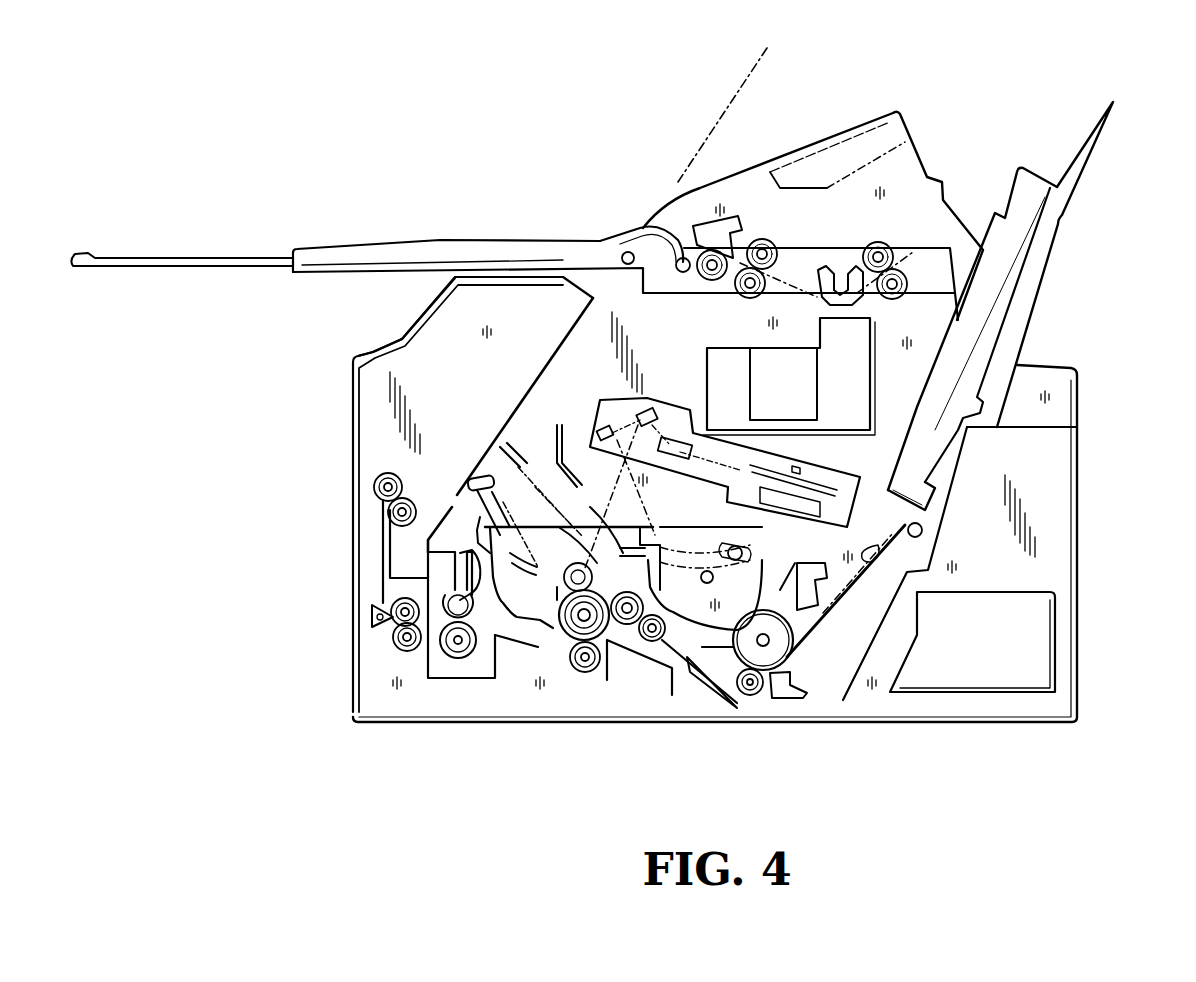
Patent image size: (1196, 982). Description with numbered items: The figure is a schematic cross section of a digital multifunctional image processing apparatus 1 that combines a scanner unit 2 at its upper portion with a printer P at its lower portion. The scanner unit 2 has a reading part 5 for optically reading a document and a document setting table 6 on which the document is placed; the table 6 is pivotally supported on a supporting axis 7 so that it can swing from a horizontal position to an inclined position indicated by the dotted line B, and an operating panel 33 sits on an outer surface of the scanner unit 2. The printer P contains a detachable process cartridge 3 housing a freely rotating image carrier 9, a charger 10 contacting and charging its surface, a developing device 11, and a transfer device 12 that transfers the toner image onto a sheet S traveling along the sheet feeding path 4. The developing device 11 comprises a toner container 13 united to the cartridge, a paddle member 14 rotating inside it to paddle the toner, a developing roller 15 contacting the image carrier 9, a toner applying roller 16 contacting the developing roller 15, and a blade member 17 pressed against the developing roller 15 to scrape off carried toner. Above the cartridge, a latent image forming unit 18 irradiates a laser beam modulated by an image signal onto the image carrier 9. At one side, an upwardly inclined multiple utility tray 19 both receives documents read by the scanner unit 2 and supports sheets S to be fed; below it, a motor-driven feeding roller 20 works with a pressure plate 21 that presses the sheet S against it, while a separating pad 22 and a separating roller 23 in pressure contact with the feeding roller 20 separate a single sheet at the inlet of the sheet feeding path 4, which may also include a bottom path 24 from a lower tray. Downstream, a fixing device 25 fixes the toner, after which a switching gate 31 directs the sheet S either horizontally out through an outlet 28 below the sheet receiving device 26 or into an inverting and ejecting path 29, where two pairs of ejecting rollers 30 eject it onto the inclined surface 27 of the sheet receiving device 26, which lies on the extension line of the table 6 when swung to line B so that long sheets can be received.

The digital multifunctional image processing apparatus 1 is at (1088, 517).
The scanner unit 2 is at (862, 172).
The process cartridge 3 is at (537, 518).
The sheet feeding path 4 is at (650, 656).
The reading part 5 is at (838, 300).
The document setting table 6 is at (322, 255).
The supporting axis 7 is at (632, 251).
The image carrier 9 is at (558, 645).
The charger 10 is at (576, 570).
The developing device 11 is at (688, 530).
The transfer device 12 is at (585, 673).
The toner container 13 is at (760, 527).
The paddle member 14 is at (701, 571).
The developing roller 15 is at (628, 625).
The toner applying roller 16 is at (662, 642).
The blade member 17 is at (661, 530).
The latent image forming unit 18 is at (613, 405).
The multiple utility tray 19 is at (1027, 263).
The feeding roller 20 is at (785, 640).
The pressure plate 21 is at (898, 544).
The separating pad 22 is at (808, 695).
The separating roller 23 is at (752, 697).
The bottom path 24 is at (737, 710).
The fixing device 25 is at (450, 678).
The sheet receiving device 26 is at (372, 365).
The inclined surface 27 is at (532, 382).
The outlet 28 is at (372, 620).
The inverting and ejecting path 29 is at (383, 545).
The ejecting rollers 30 is at (373, 482).
The switching gate 31 is at (373, 627).
The operating panel 33 is at (810, 140).
The dotted line B is at (745, 78).
The printer P is at (589, 318).
The sheet S is at (875, 558).